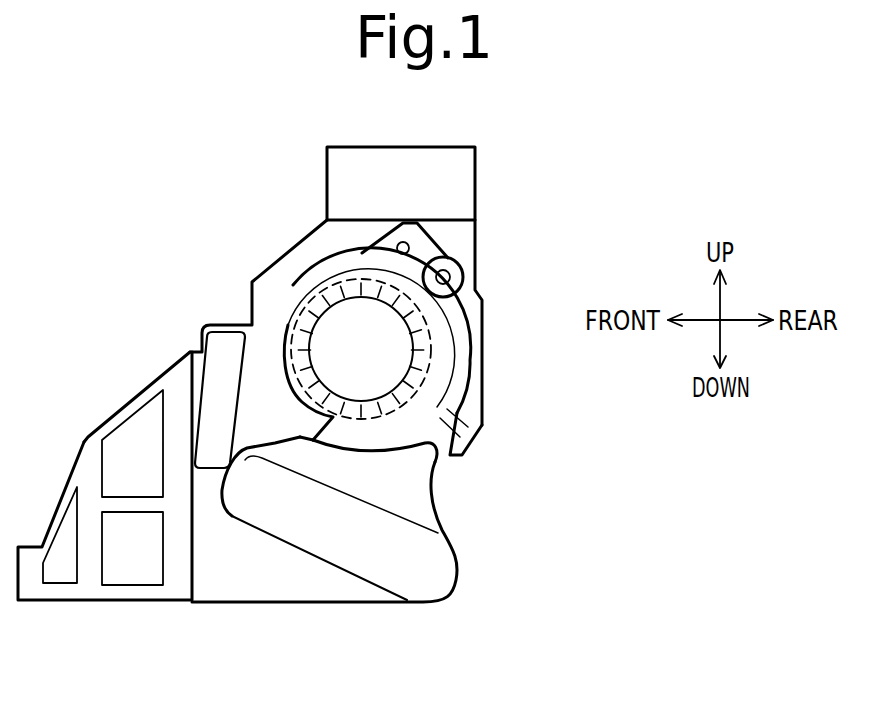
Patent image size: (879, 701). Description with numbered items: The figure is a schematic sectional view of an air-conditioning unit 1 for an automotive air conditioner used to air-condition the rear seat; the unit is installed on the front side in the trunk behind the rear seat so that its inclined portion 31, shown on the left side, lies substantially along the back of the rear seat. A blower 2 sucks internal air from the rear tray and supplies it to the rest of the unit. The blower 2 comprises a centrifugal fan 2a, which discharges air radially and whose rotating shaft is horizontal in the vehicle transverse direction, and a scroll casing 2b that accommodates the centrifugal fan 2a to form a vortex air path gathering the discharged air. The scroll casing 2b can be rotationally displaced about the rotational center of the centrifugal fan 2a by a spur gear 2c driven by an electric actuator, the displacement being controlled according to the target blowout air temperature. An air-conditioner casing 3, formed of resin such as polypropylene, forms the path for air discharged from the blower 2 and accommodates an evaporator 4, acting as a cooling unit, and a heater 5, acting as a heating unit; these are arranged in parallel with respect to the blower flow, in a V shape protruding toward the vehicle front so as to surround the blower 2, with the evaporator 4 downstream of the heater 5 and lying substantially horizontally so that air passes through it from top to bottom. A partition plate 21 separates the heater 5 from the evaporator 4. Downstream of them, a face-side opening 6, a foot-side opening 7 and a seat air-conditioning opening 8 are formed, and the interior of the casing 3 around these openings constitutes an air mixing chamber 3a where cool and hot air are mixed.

The air-conditioning unit 1 is at (483, 157).
The blower 2 is at (482, 363).
The centrifugal fan 2a is at (423, 322).
The scroll casing 2b is at (478, 419).
The spur gear 2c is at (452, 256).
The air-conditioner casing 3 is at (436, 496).
The air mixing chamber 3a is at (93, 477).
The inclined portion of the air-conditioning unit 31 is at (158, 372).
The evaporator 4 is at (395, 535).
The heater 5 is at (222, 365).
The face-side opening 6 is at (128, 558).
The foot-side opening 7 is at (130, 450).
The seat air-conditioning opening 8 is at (55, 545).
The partition plate 21 is at (288, 447).